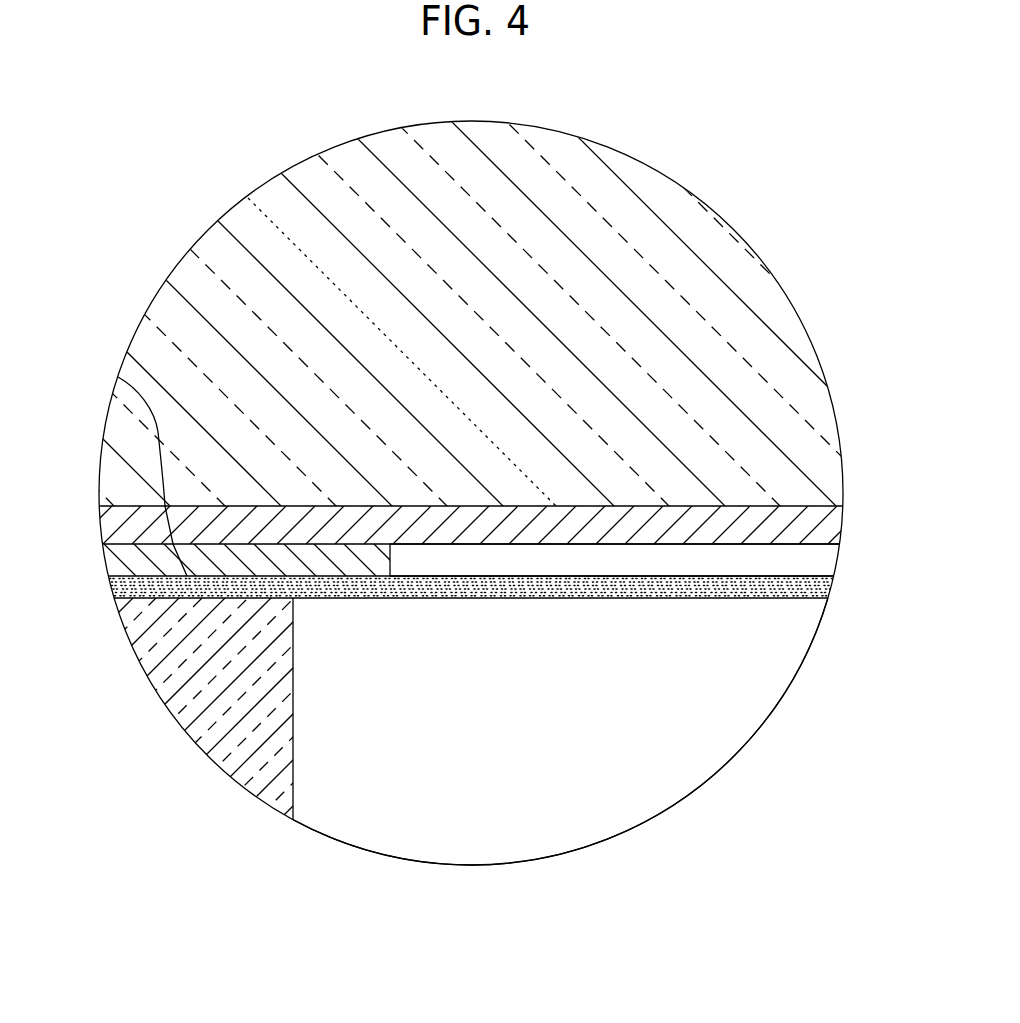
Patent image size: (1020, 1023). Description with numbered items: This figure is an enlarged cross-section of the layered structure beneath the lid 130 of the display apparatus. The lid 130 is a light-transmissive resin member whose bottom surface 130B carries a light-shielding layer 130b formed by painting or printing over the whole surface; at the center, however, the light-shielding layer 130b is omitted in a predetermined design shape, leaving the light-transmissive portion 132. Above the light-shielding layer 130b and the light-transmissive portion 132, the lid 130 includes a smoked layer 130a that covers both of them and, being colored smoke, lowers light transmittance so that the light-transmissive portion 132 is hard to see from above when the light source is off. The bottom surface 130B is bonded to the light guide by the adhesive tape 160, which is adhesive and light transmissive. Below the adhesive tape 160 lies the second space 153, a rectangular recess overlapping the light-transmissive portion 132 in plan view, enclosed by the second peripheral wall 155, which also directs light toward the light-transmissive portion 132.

The lid 130 is at (693, 343).
The smoked layer 130a is at (840, 530).
The light-shielding layer 130b is at (107, 557).
The bottom surface 130B is at (118, 377).
The light-transmissive portion 132 is at (823, 560).
The second space 153 is at (692, 642).
The second peripheral wall 155 is at (230, 697).
The adhesive tape 160 is at (830, 597).